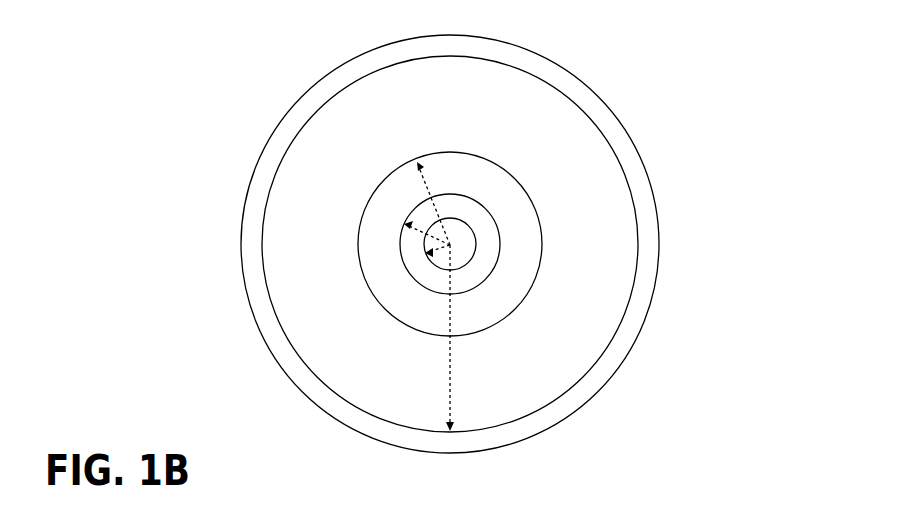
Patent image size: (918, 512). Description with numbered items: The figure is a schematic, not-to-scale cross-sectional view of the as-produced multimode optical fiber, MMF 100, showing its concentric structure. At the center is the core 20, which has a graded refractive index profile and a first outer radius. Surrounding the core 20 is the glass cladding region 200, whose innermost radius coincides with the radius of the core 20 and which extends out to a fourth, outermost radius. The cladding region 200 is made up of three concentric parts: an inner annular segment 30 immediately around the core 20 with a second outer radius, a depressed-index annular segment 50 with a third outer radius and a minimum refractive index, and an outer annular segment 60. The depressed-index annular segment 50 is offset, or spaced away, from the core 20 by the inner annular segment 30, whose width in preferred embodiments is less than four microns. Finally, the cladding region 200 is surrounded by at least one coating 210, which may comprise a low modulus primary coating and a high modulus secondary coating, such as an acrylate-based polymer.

The MMF 100 is at (200, 139).
The coating 210 is at (263, 315).
The glass cladding region 200 is at (544, 244).
The outer annular segment 60 is at (573, 180).
The depressed-index annular segment 50 is at (510, 213).
The inner annular segment 30 is at (490, 245).
The core 20 is at (462, 247).